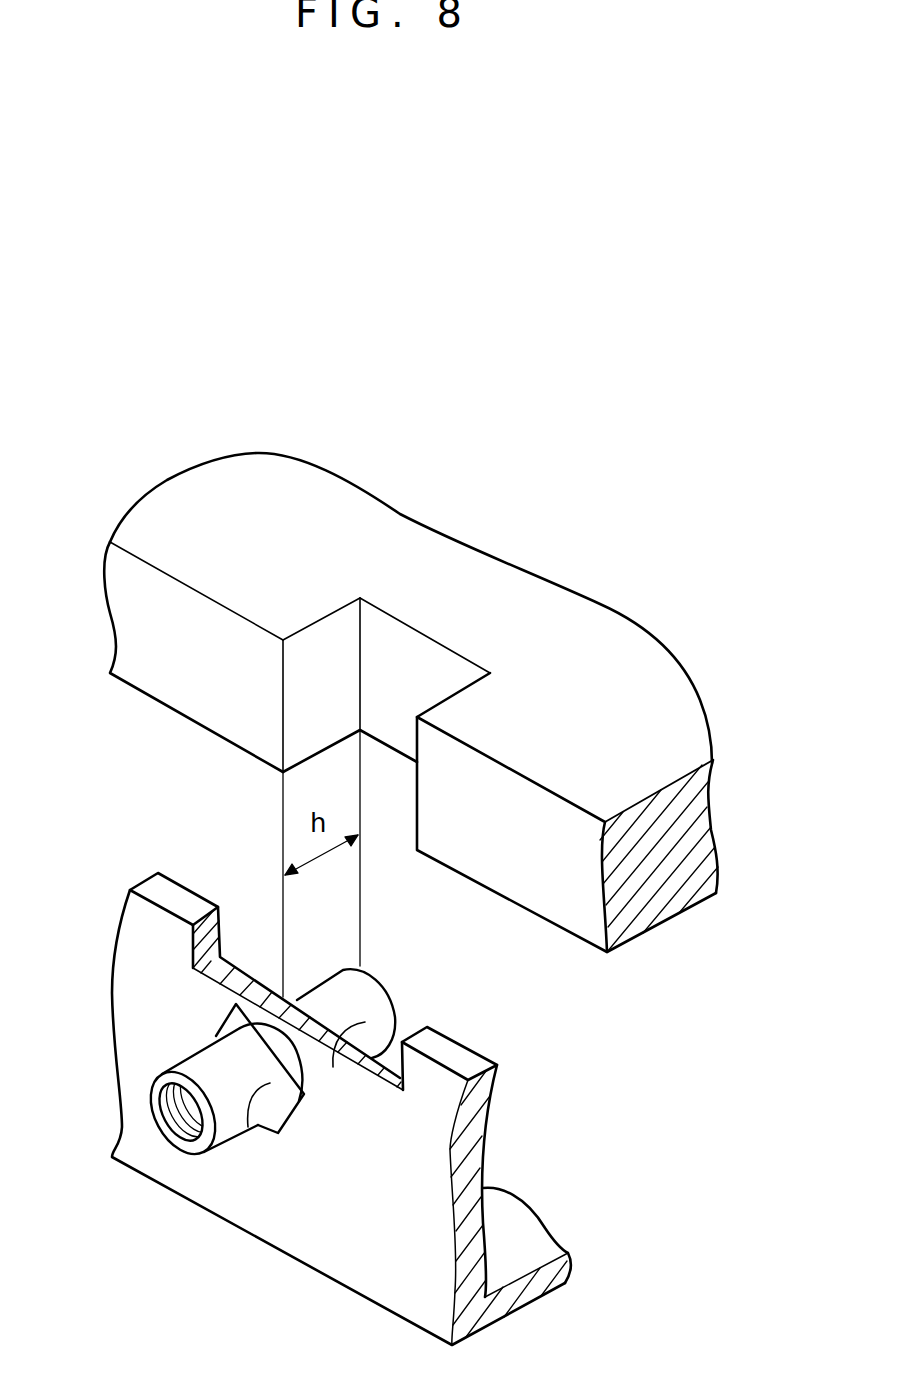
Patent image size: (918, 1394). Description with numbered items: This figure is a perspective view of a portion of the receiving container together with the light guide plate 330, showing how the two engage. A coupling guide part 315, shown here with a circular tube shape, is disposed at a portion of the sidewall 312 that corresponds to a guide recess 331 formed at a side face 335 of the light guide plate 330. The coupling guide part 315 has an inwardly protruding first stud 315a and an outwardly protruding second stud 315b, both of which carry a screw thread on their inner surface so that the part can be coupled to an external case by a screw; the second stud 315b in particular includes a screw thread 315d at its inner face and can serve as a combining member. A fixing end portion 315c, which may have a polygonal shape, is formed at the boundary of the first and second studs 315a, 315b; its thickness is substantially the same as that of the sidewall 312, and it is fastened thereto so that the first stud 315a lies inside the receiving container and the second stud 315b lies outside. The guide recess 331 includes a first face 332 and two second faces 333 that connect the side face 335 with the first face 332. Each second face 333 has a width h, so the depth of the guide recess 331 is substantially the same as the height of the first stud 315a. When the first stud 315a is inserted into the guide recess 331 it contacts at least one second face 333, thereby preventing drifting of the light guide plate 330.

The light guide plate 330 is at (451, 716).
The guide recess 331 is at (386, 595).
The first face 332 is at (376, 636).
The second face 333 is at (306, 636).
The side face 335 is at (551, 880).
The sidewall 312 is at (130, 1133).
The coupling guide part 315 is at (239, 1155).
The first stud 315a is at (333, 1067).
The second stud 315b is at (248, 1127).
The fixing end portion 315c is at (276, 1135).
The screw thread 315d is at (164, 1150).